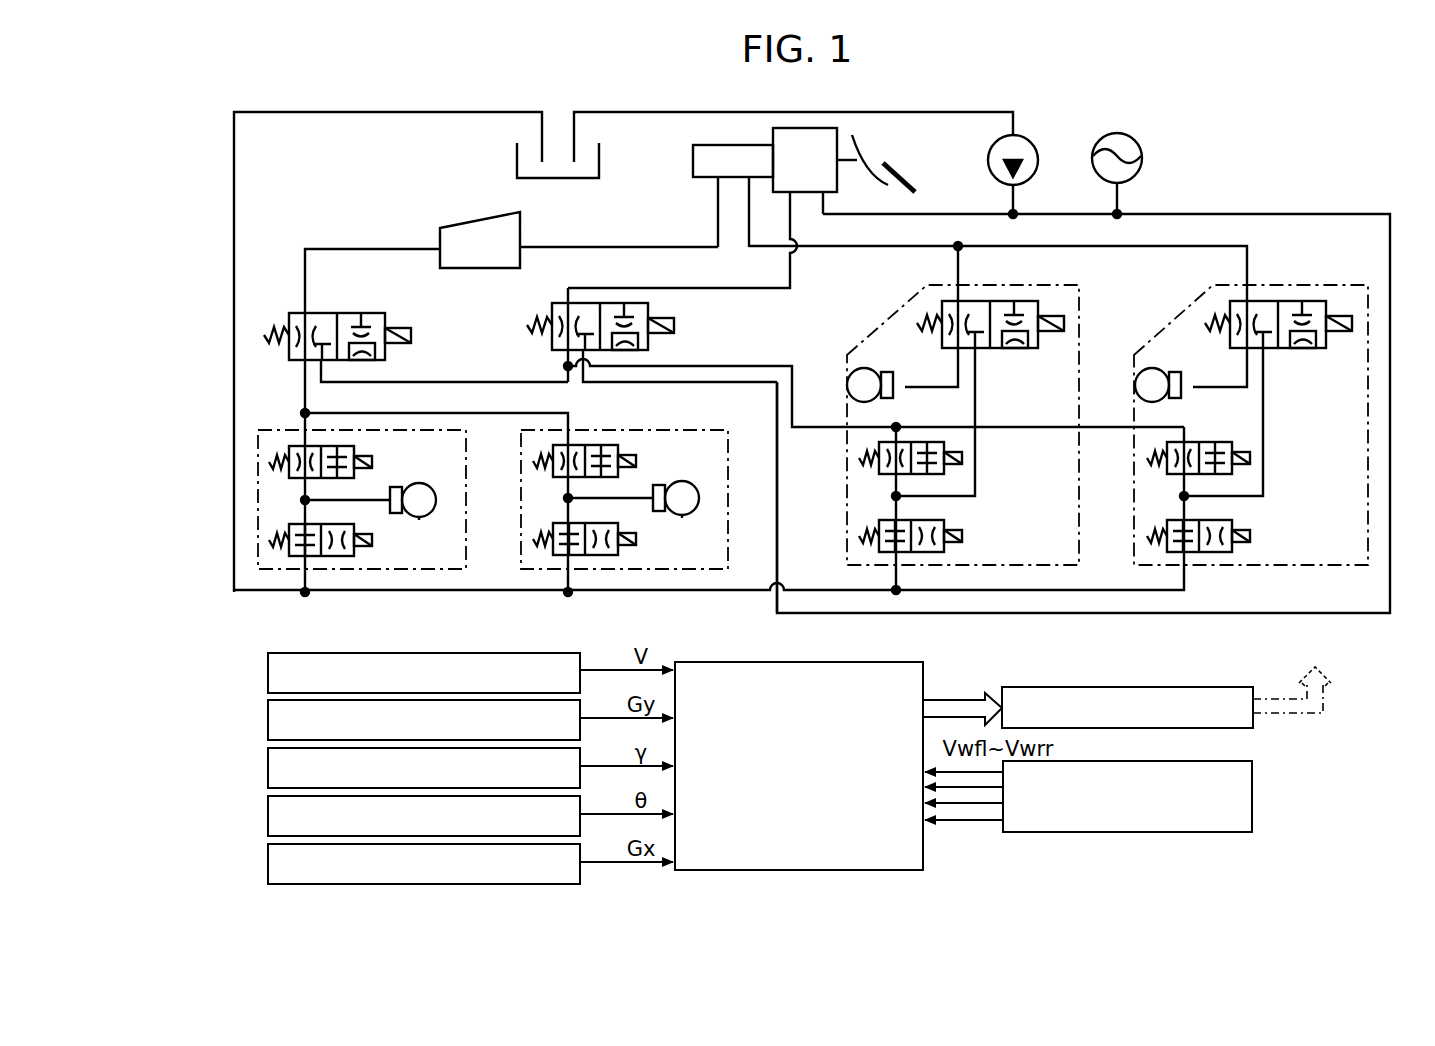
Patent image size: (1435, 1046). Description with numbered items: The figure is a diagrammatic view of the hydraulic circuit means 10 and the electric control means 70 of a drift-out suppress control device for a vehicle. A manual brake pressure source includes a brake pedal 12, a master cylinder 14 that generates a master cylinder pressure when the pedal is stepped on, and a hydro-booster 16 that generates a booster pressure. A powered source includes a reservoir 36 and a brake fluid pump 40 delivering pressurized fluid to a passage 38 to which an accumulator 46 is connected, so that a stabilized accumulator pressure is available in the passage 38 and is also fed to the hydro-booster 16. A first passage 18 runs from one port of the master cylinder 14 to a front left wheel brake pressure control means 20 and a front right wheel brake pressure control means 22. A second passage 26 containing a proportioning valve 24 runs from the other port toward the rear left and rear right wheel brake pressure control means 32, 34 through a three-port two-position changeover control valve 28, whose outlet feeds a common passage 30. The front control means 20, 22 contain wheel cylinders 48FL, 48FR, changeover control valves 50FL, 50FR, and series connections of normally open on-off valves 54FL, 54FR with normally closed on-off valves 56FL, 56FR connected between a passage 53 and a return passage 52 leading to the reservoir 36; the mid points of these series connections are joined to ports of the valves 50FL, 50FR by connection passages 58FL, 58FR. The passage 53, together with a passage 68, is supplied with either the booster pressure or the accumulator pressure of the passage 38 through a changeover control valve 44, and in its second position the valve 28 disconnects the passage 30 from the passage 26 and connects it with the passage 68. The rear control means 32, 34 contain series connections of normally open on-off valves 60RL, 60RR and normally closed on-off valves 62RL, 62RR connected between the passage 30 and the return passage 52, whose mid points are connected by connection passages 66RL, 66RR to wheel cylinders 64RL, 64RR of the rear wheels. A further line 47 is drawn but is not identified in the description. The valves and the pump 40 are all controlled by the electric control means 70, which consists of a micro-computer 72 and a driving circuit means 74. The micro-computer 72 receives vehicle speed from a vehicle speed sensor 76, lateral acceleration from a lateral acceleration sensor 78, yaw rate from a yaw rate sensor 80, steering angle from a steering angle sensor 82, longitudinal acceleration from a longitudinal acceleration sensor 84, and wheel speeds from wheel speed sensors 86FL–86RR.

The hydraulic circuit means 10 is at (220, 176).
The brake pedal 12 is at (904, 171).
The master cylinder 14 is at (705, 147).
The hydro-booster 16 is at (702, 208).
The first passage 18 is at (810, 250).
The front left wheel brake pressure control means 20 is at (905, 308).
The front right wheel brake pressure control means 22 is at (1185, 315).
The proportioning valve 24 is at (460, 224).
The second passage 26 is at (323, 249).
The 3-ports-2-positions changeover type electromagnetic control valve 28 is at (326, 312).
The common passage 30 is at (312, 403).
The rear left wheel brake pressure control means 32 is at (278, 430).
The rear right wheel brake pressure control means 34 is at (600, 569).
The reservoir 36 is at (517, 160).
The passage 38 is at (1278, 214).
The brake fluid pump 40 is at (1036, 159).
The 3-ports-2-positions changeover type electronic control valve 44 is at (602, 303).
The accumulator 46 is at (1143, 156).
The conduit 47 is at (709, 288).
The wheel cylinder 48FL is at (899, 402).
The wheel cylinder 48FR is at (1187, 402).
The 3-ports-2-positions changeover type electromagnetic control valve 50FL is at (1006, 301).
The 3-ports-2-positions changeover type electromagnetic control valve 50FR is at (1274, 301).
The return passage 52 is at (816, 589).
The passage 53 is at (766, 366).
The normally open type electromagnetic on-off valve 54FL is at (948, 474).
The normally open type electromagnetic on-off valve 54FR is at (1233, 470).
The normally closed type electromagnetic on-off valve 56FL is at (945, 523).
The normally closed type electromagnetic on-off valve 56FR is at (1238, 523).
The connection passage 58FL is at (980, 380).
The connection passage 58FR is at (1268, 380).
The normally open type electromagnetic on-off valve 60RL is at (298, 478).
The normally open type electromagnetic on-off valve 60RR is at (592, 445).
The normally closed type electromagnetic on-off valve 62RL is at (300, 556).
The normally closed type electromagnetic on-off valve 62RR is at (563, 554).
The wheel cylinder 64RL is at (419, 518).
The wheel cylinder 64RR is at (682, 516).
The connection passage 66RL is at (396, 487).
The connection passage 66RR is at (652, 485).
The passage 68 is at (449, 382).
The electric control means 70 is at (1368, 722).
The micro-computer 72 is at (799, 766).
The driving circuit means 74 is at (1195, 728).
The vehicle speed sensor 76 is at (268, 672).
The lateral acceleration sensor 78 is at (268, 720).
The yaw rate sensor 80 is at (268, 768).
The steering angle sensor 82 is at (268, 816).
The longitudinal acceleration sensor 84 is at (268, 864).
The wheel speed sensor 86FL is at (1215, 796).
The wheel speed sensor 86RR is at (1252, 797).